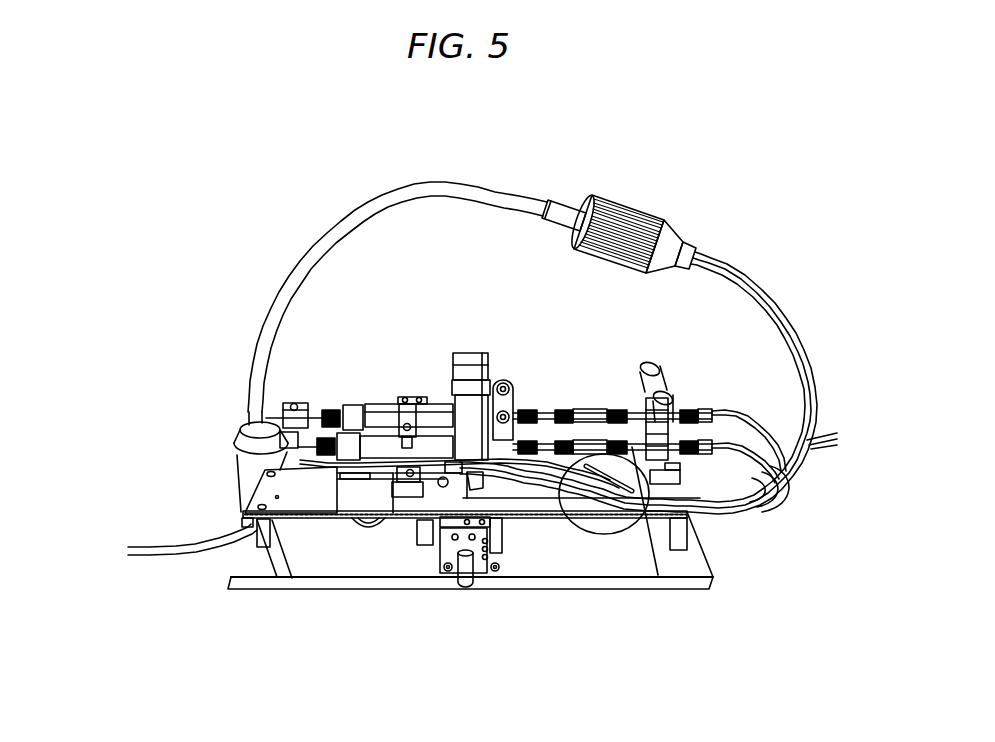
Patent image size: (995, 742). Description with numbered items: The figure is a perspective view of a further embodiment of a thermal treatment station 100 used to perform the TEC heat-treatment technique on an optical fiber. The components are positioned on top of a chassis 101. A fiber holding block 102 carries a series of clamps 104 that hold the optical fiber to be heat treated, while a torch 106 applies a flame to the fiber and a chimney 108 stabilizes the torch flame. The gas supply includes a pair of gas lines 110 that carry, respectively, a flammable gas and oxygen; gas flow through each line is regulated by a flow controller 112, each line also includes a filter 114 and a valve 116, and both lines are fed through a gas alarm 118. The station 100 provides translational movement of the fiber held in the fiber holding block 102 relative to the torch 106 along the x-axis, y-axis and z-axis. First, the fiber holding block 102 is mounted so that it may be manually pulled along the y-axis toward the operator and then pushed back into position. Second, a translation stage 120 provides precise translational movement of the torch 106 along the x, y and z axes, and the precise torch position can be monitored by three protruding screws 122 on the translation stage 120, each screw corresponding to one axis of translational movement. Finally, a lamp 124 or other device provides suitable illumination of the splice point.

The thermal treatment station 100 is at (724, 110).
The chassis 101 is at (238, 568).
The fiber holding block 102 is at (312, 492).
The clamps 104 is at (360, 480).
The torch 106 is at (297, 457).
The chimney 108 is at (395, 446).
The gas lines 110 is at (758, 517).
The flow controller 112 is at (497, 400).
The filter 114 is at (480, 355).
The valve 116 is at (668, 380).
The gas alarm 118 is at (622, 482).
The translation stage 120 is at (446, 583).
The screws 122 is at (452, 583).
The lamp 124 is at (425, 483).